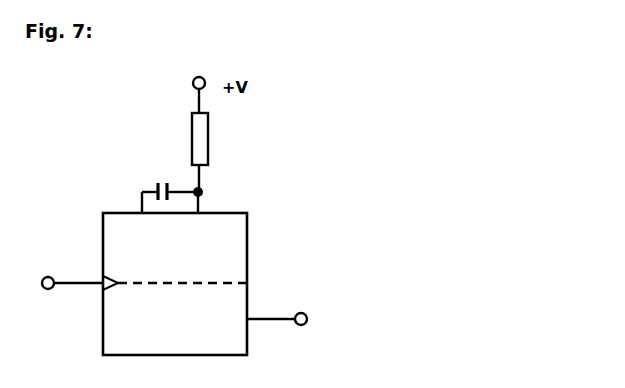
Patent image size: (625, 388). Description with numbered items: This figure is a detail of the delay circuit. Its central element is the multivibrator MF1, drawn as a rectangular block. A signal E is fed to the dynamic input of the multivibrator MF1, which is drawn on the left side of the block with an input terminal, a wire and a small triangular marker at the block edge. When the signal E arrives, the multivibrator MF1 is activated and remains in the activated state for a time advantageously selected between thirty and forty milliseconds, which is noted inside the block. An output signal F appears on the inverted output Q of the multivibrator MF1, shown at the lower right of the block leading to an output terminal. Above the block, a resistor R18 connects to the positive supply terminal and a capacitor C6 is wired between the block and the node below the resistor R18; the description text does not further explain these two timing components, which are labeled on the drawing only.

The resistor R18 is at (219, 152).
The capacitor C6 is at (170, 182).
The multivibrator MF1 is at (334, 284).
The signal E is at (71, 294).
The inverted output Q is at (241, 303).
The output signal F is at (299, 310).